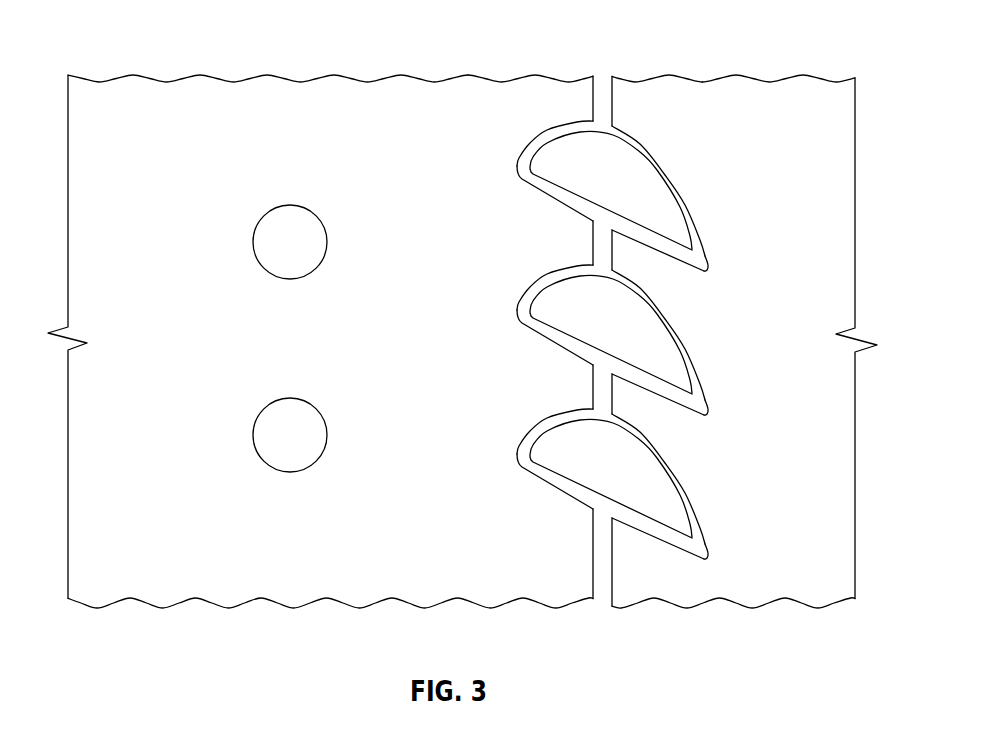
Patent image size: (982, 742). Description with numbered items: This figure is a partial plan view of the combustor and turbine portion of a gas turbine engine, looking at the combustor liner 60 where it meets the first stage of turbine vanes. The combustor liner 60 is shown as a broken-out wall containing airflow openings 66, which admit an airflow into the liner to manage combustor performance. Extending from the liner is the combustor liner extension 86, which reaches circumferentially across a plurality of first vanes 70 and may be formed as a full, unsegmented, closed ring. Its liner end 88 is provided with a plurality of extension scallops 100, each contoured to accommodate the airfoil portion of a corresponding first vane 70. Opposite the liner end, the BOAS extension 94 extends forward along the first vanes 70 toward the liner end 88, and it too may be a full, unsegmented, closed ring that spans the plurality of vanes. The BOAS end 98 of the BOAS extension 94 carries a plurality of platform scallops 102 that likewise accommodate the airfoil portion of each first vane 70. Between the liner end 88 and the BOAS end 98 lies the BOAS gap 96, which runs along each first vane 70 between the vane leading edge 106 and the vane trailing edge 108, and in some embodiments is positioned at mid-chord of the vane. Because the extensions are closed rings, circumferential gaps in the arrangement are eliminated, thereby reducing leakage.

The radially outer combustor liner 60 is at (200, 88).
The airflow openings 66 is at (253, 240).
The first vanes 70 is at (613, 191).
The combustor liner extension 86 is at (388, 360).
The liner end 88 is at (580, 82).
The BOAS extension 94 is at (767, 82).
The BOAS gap 96 is at (603, 83).
The BOAS end 98 is at (628, 82).
The extension scallops 100 is at (515, 175).
The platform scallops 102 is at (713, 269).
The vane leading edge 106 is at (522, 162).
The vane trailing edge 108 is at (698, 249).